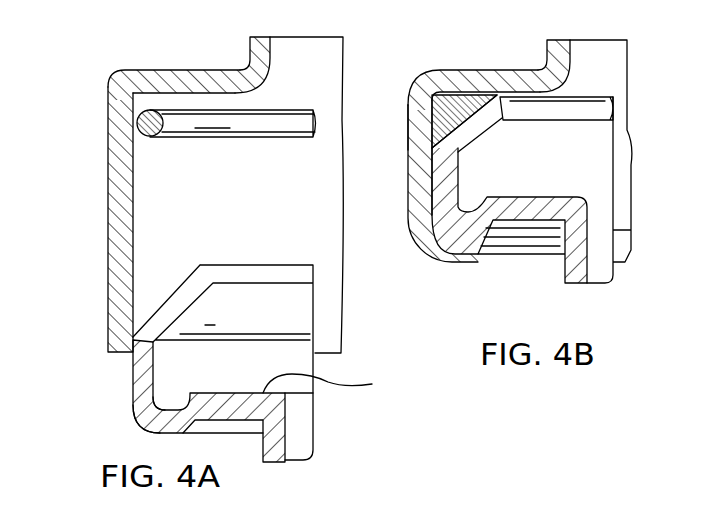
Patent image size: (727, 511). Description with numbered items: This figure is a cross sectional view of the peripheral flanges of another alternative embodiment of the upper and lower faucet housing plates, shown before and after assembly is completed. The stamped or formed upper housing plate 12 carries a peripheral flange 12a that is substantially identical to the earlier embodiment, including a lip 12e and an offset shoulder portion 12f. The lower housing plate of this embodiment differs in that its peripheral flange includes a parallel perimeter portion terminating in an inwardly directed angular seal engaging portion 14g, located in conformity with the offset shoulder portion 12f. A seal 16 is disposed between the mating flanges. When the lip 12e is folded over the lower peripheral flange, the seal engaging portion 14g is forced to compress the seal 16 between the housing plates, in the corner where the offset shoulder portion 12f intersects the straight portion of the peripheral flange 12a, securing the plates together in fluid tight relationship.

In FIG. 4A, the upper housing plate 12 is at (203, 66).
In FIG. 4B, the upper housing plate 12 is at (507, 62).
In FIG. 4A, the offset shoulder portion 12f is at (153, 68).
In FIG. 4B, the offset shoulder portion 12f is at (463, 70).
In FIG. 4A, the lip 12e is at (107, 217).
In FIG. 4B, the lip 12e is at (450, 247).
In FIG. 4B, the peripheral flange 12a is at (417, 105).
In FIG. 4A, the seal 16 is at (283, 117).
In FIG. 4A, the angular seal engaging portion 14g is at (172, 287).
In FIG. 4B, the angular seal engaging portion 14g is at (467, 117).